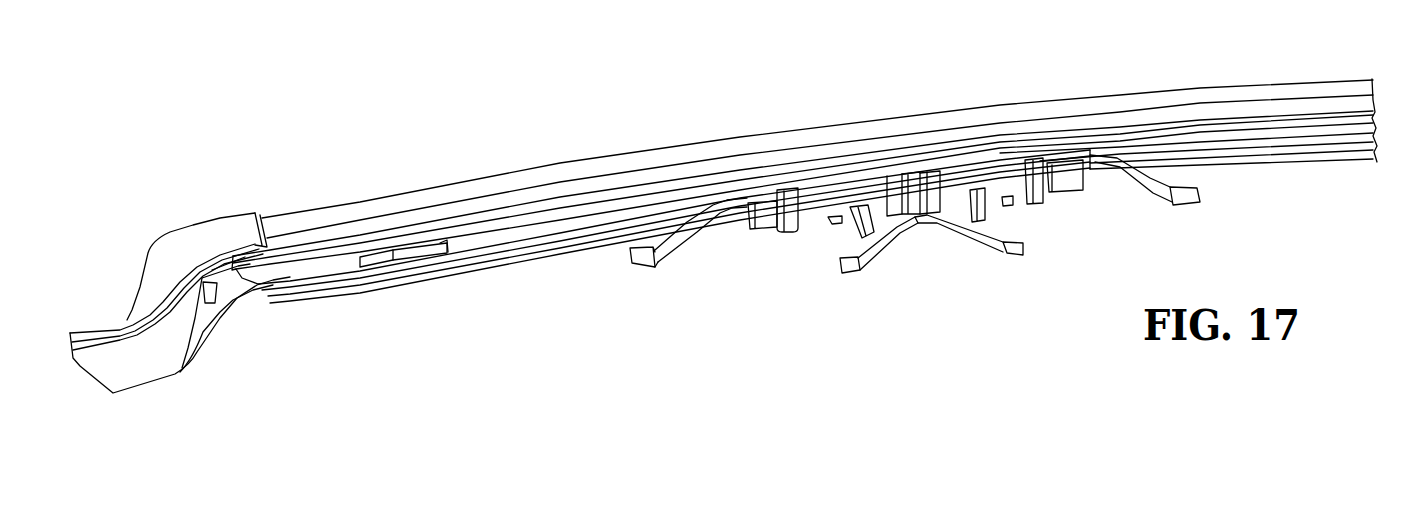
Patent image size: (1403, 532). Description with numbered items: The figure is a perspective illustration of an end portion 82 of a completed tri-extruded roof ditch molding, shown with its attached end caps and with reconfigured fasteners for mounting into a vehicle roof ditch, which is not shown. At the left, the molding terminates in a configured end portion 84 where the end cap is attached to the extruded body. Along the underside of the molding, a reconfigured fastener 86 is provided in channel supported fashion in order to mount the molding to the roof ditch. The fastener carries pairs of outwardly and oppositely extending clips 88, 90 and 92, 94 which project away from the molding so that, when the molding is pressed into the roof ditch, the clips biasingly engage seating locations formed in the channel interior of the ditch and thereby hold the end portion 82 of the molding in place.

The end portion 82 is at (749, 128).
The configured end portion 84 is at (196, 233).
The reconfigured fastener 86 is at (822, 197).
The clip 88 is at (847, 273).
The clip 90 is at (1012, 255).
The clip 92 is at (647, 267).
The clip 94 is at (1182, 205).